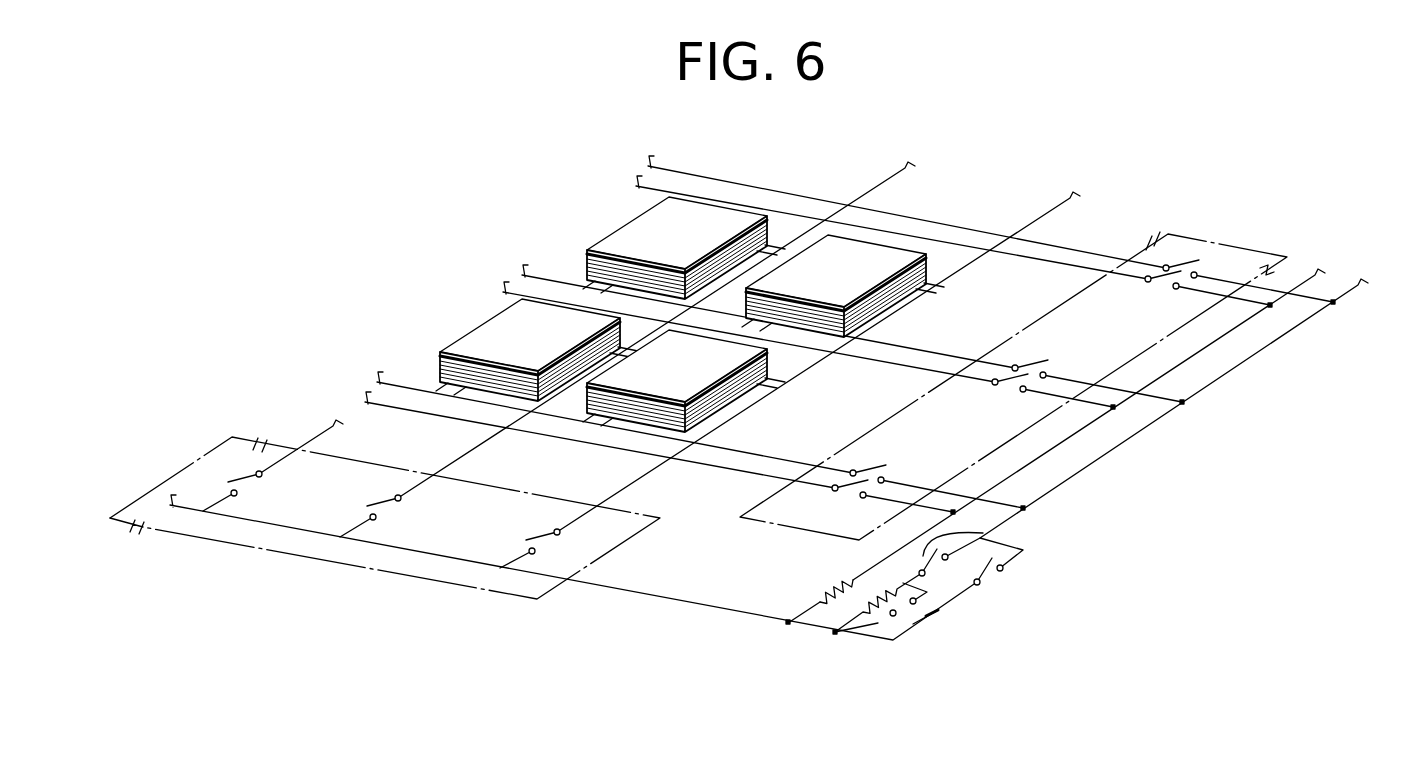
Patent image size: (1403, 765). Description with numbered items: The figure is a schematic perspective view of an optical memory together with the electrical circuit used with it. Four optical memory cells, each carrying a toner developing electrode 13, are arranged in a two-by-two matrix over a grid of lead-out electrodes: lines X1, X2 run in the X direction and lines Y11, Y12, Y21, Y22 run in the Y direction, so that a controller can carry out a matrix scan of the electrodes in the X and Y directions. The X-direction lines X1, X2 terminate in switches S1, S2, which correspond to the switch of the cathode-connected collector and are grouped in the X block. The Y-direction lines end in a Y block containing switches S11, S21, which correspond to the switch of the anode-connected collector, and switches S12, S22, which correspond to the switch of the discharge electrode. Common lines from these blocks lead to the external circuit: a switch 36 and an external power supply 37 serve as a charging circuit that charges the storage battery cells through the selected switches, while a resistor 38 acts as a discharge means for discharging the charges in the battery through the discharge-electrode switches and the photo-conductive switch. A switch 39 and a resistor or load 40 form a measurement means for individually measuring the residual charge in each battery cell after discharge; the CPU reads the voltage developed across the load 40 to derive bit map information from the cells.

The toner developing electrode 13 is at (487, 337).
The switch 36 is at (1003, 580).
The external power supply 37 is at (947, 626).
The resistor 38 is at (830, 579).
The switch 39 is at (998, 532).
The resistor (load) 40 is at (905, 653).
The X-direction X is at (568, 582).
The Y-direction Y is at (773, 524).
The X-direction electrode X1 is at (818, 362).
The X-direction electrode X2 is at (656, 330).
The Y-direction electrode Y11 is at (615, 422).
The Y-direction electrode Y12 is at (600, 447).
The Y-direction electrode Y21 is at (768, 316).
The Y-direction electrode Y22 is at (749, 340).
The switch S1 is at (530, 538).
The switch S2 is at (369, 505).
The switch S11 is at (936, 473).
The switch S12 is at (877, 503).
The switch S21 is at (1097, 368).
The switch S22 is at (1041, 398).